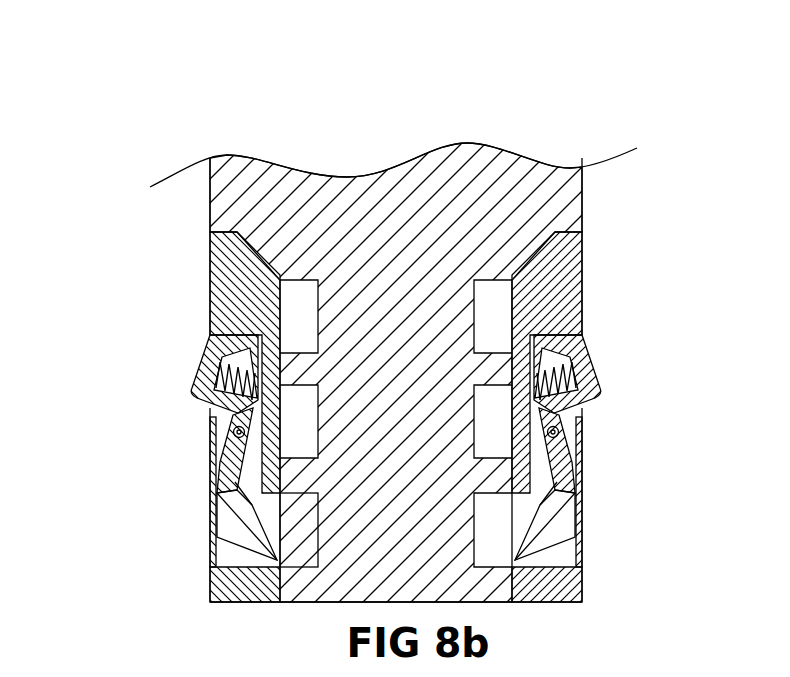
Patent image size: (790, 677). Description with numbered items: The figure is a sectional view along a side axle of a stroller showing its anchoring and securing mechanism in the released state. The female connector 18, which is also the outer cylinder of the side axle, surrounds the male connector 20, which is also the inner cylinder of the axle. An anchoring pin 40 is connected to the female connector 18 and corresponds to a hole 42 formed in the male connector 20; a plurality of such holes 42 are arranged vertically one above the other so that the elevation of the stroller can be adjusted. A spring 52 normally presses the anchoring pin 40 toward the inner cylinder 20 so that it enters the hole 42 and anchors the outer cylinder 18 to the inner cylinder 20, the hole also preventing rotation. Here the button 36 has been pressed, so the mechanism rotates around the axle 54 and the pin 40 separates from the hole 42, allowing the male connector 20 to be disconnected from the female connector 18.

The female connector 18 is at (565, 273).
The male connector 20 is at (430, 240).
The button 36 is at (598, 392).
The anchoring pin 40 is at (563, 517).
The hole 42 is at (312, 530).
The spring 52 is at (580, 336).
The axle 54 is at (552, 433).